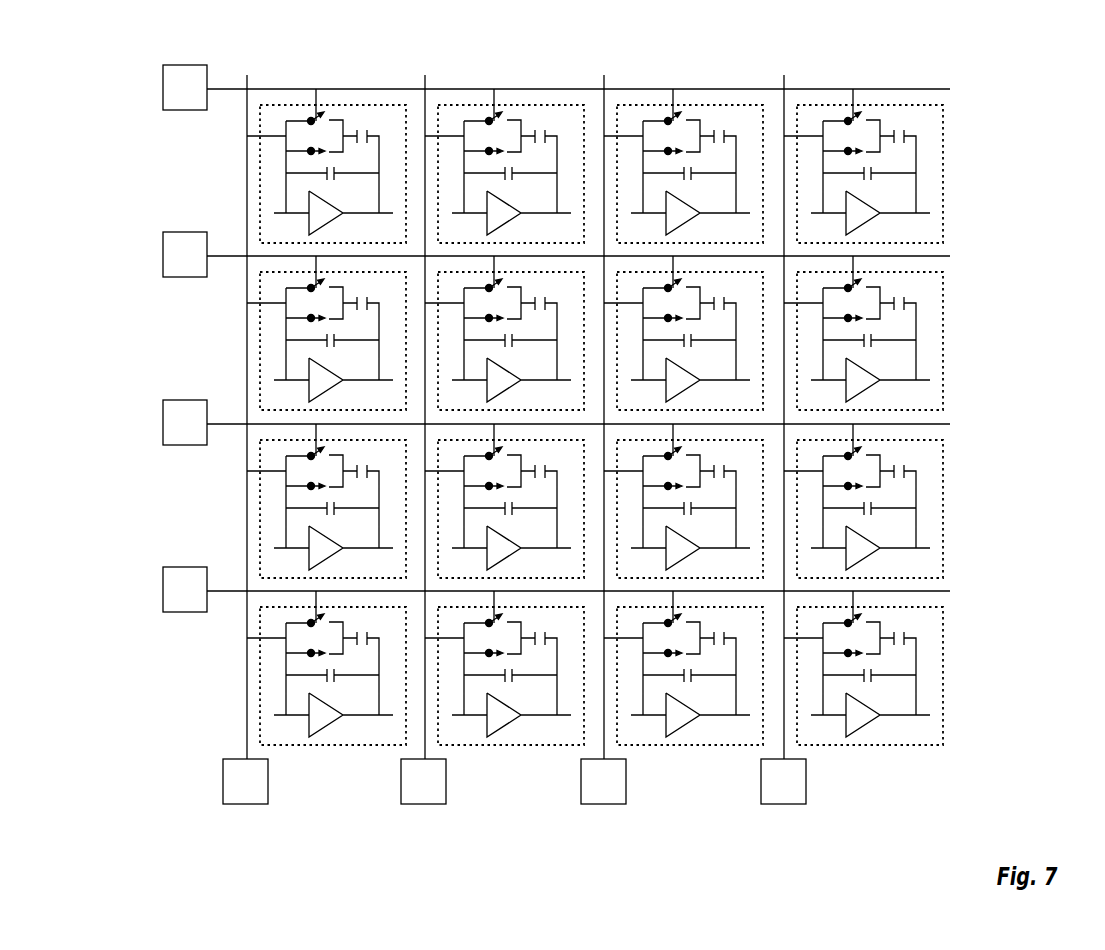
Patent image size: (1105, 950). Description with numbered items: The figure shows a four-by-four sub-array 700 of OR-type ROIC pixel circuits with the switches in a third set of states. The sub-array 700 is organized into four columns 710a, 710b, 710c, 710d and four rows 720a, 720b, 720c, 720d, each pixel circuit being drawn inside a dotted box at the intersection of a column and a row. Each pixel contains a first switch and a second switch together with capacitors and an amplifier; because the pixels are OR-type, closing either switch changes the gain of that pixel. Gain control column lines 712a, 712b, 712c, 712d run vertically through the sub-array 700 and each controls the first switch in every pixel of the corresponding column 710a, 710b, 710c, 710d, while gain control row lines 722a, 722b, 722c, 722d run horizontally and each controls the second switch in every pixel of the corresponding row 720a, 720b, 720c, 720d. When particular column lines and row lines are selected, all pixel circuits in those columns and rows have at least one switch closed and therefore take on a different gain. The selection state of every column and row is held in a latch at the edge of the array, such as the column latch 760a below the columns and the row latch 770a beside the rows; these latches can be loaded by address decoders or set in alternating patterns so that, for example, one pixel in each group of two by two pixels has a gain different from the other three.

The sub-array 700 is at (558, 451).
The column 710a is at (338, 87).
The column 710b is at (525, 87).
The column 710c is at (697, 87).
The column 710d is at (868, 87).
The gain control column line 712a is at (293, 813).
The gain control column line 712b is at (435, 753).
The gain control column line 712c is at (614, 753).
The gain control column line 712d is at (794, 753).
The row 720a is at (218, 712).
The row 720b is at (218, 542).
The row 720c is at (218, 369).
The row 720d is at (218, 199).
The gain control row line 722a is at (146, 607).
The gain control row line 722b is at (233, 427).
The gain control row line 722c is at (233, 259).
The gain control row line 722d is at (233, 92).
The latch 760a is at (243, 805).
The latch 770a is at (162, 594).